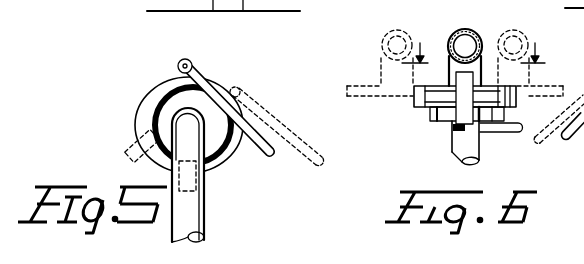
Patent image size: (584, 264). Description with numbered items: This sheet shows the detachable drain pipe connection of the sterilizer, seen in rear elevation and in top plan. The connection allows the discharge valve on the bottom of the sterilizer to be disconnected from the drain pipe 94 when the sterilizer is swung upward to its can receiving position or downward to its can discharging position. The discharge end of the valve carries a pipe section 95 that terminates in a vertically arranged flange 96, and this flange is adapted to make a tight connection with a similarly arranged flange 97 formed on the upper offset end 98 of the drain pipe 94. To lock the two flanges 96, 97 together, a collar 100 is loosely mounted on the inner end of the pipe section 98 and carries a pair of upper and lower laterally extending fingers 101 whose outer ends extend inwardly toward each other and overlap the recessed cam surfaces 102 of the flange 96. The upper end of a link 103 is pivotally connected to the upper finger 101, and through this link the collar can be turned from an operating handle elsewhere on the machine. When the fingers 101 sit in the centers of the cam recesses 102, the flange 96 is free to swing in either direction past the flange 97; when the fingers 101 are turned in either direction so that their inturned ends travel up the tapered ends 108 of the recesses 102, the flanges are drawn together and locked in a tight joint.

In FIG. 5, the drain pipe 94 is at (190, 206).
In FIG. 6, the pipe section 95 is at (466, 30).
In FIG. 6, the flange 96 is at (416, 97).
In FIG. 5, the flange 97 is at (135, 131).
In FIG. 6, the flange 97 is at (425, 110).
In FIG. 6, the upper offset end 98 is at (458, 142).
In FIG. 5, the collar 100 is at (158, 116).
In FIG. 6, the collar 100 is at (501, 142).
In FIG. 5, the fingers 101 is at (190, 93).
In FIG. 6, the fingers 101 is at (481, 80).
In FIG. 6, the recessed cam surfaces 102 is at (451, 85).
In FIG. 5, the link 103 is at (258, 133).
In FIG. 6, the link 103 is at (559, 130).
In FIG. 6, the tapered ends 108 is at (500, 78).